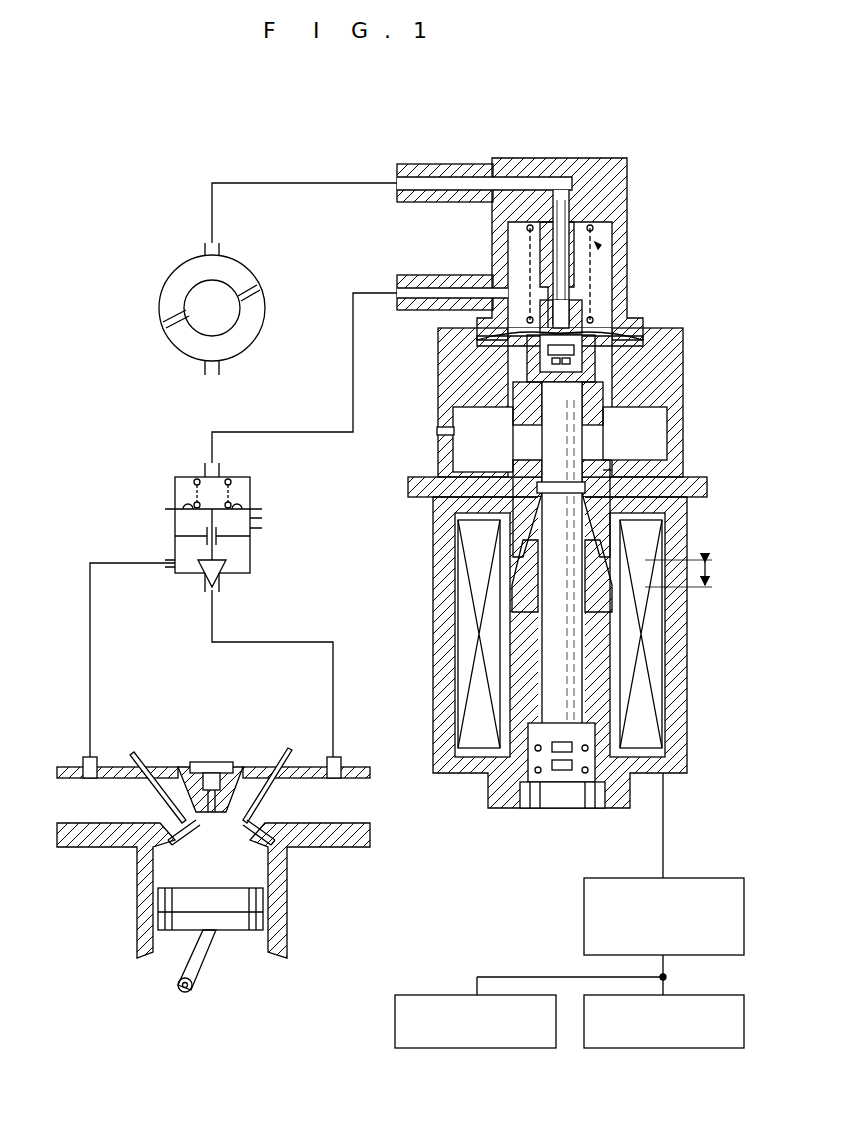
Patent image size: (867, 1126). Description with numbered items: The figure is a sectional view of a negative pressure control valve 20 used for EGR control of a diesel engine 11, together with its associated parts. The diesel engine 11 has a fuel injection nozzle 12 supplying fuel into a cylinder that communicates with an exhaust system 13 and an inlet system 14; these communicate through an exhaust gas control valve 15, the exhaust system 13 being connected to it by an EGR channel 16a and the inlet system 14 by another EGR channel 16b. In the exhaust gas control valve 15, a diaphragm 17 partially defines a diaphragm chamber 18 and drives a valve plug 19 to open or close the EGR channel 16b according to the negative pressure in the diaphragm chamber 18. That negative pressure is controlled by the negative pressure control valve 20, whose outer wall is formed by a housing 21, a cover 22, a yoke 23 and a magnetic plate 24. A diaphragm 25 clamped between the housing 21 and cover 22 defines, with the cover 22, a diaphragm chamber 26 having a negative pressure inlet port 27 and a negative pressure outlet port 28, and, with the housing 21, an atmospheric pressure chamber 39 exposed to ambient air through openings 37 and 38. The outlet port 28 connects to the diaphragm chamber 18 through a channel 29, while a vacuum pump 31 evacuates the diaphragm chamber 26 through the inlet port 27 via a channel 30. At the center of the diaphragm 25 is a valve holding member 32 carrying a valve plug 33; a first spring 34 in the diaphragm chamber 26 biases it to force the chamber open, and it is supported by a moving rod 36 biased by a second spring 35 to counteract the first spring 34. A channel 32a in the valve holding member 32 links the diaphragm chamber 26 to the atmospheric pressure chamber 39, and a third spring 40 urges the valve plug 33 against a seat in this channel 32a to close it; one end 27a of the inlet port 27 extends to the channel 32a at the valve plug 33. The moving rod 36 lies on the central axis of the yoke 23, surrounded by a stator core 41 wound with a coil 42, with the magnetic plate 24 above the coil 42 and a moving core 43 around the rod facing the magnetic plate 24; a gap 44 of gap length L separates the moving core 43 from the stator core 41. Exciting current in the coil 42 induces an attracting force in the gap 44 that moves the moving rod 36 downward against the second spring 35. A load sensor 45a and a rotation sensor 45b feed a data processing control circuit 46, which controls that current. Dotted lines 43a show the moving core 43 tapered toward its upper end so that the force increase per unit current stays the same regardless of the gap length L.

The diesel engine 11 is at (290, 872).
The fuel injection nozzle 12 is at (215, 762).
The exhaust system 13 is at (78, 761).
The inlet system 14 is at (347, 761).
The exhaust gas control valve 15 is at (262, 545).
The EGR channel 16a is at (93, 630).
The EGR channel 16b is at (280, 645).
The diaphragm 17 is at (178, 506).
The diaphragm chamber 18 is at (250, 492).
The valve plug 19 is at (228, 580).
The negative pressure control valve 20 is at (688, 292).
The housing 21 is at (683, 372).
The cover 22 is at (627, 166).
The yoke 23 is at (687, 655).
The magnetic plate 24 is at (683, 480).
The diaphragm 25 is at (628, 340).
The diaphragm chamber 26 is at (600, 246).
The negative pressure inlet port 27 is at (433, 162).
The one end of the negative pressure inlet port 27a is at (590, 335).
The negative pressure outlet port 28 is at (409, 284).
The channel 29 is at (354, 326).
The channel 30 is at (340, 193).
The vacuum pump 31 is at (262, 281).
The valve holding member 32 is at (532, 313).
The channel 32a is at (535, 330).
The valve plug 33 is at (503, 339).
The first spring 34 is at (595, 230).
The second spring 35 is at (545, 792).
The moving rod 36 is at (566, 697).
The opening 37 is at (485, 439).
The opening 38 is at (438, 430).
The atmospheric pressure chamber 39 is at (530, 350).
The third spring 40 is at (635, 433).
The stator core 41 is at (625, 628).
The coil 42 is at (470, 575).
The moving core 43 is at (515, 495).
The dotted lines 43a is at (606, 481).
The gap 44 is at (522, 560).
The load sensor 45a is at (731, 1008).
The rotation sensor 45b is at (420, 995).
The data processing control circuit 46 is at (740, 882).
The gap length L is at (685, 575).